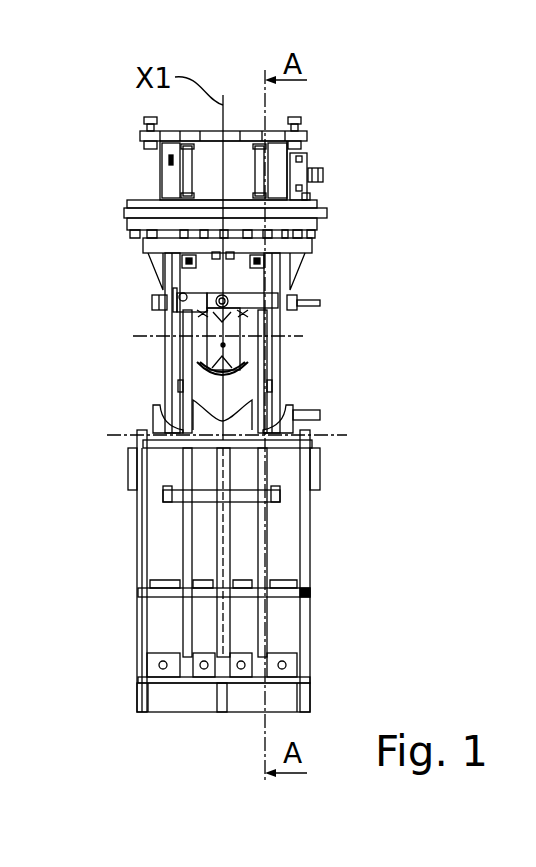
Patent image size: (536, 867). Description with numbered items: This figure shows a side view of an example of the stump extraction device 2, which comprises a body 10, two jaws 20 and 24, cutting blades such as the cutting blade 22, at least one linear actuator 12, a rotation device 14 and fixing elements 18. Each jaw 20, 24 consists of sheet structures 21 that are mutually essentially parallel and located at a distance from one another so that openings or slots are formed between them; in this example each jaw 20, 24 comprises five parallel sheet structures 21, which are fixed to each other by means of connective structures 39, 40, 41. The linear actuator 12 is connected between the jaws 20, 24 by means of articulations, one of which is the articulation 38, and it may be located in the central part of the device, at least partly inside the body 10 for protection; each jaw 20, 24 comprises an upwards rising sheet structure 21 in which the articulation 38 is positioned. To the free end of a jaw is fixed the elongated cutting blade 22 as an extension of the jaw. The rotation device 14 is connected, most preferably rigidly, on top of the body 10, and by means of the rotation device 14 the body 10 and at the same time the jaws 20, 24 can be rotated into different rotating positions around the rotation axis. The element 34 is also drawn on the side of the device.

The machine tool / device 2 is at (60, 159).
The fixing elements 18 is at (122, 117).
The rotation device 14 is at (335, 183).
The articulation 38 is at (0, 280).
The body 10 is at (275, 325).
The linear actuator 12 is at (230, 350).
The flange 34 is at (160, 405).
The jaw 20 is at (330, 570).
The jaw 24 is at (0, 643).
The connective structure 40 is at (315, 465).
The sheet structures 21 is at (223, 522).
The connective structure 39 is at (305, 592).
The connective structure 41 is at (285, 668).
The cutting blade 22 is at (200, 702).